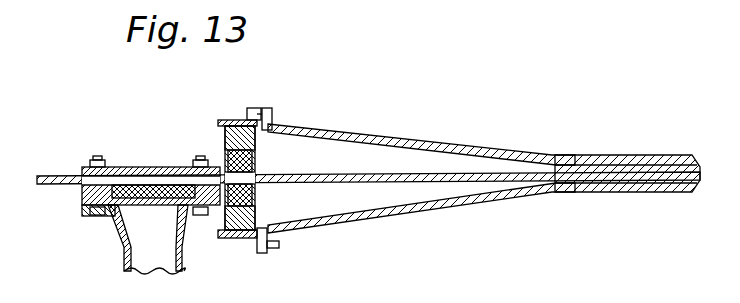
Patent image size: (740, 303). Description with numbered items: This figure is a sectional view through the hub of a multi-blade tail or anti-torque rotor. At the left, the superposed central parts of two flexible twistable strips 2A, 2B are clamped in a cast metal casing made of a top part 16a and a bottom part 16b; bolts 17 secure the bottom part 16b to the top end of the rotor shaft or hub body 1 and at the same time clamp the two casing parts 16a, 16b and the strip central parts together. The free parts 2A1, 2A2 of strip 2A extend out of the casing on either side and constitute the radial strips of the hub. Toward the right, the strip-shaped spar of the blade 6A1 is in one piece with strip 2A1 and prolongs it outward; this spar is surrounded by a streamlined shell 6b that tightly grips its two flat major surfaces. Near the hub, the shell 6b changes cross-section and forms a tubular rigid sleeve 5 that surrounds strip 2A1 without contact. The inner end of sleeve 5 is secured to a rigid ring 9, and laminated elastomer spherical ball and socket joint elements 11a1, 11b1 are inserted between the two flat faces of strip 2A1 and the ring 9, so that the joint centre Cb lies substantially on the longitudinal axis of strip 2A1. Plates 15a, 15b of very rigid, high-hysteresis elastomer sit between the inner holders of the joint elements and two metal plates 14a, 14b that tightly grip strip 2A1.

The rotor shaft or hub body 1 is at (111, 238).
The flexible twistable strip 2A is at (478, 188).
The free part of strip 2A1 is at (398, 184).
The free part of strip 2A2 is at (55, 188).
The flexible twistable strip 2B is at (153, 194).
The tubular rigid sleeve 5 is at (426, 137).
The stream-lined shell 6b is at (610, 160).
The blade 6A1 is at (643, 197).
The rigid ring 9 is at (228, 119).
The spherical ball and socket joint element 11a1 is at (234, 240).
The spherical ball and socket joint element 11b1 is at (276, 128).
The metal plate 14a is at (258, 186).
The metal plate 14b is at (258, 165).
The plate of high-hysteresis elastomer 15a is at (255, 199).
The plate of high-hysteresis elastomer 15b is at (226, 156).
The casing top part 16a is at (122, 166).
The casing bottom part 16b is at (80, 177).
The bolt 17 is at (97, 159).
The centre of the ball and socket joint Cb is at (288, 194).